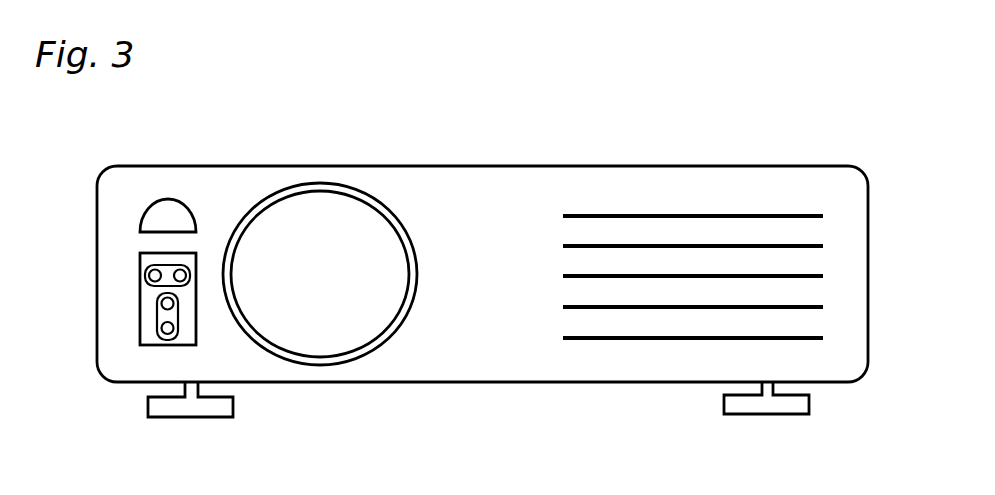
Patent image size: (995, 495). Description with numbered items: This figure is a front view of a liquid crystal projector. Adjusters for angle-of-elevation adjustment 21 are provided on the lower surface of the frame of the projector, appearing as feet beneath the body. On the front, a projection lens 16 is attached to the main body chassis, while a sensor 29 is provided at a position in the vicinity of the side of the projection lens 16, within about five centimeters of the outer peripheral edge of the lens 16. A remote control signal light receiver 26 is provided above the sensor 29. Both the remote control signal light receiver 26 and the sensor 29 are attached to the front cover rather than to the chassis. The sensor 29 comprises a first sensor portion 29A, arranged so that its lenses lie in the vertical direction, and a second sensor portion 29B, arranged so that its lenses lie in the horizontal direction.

The projection lens 16 is at (340, 202).
The remote control signal light receiver 26 is at (167, 202).
The sensor 29 is at (120, 333).
The first sensor portion 29A is at (165, 316).
The second sensor portion 29B is at (146, 275).
The adjusters for angle-of-elevation adjustment 21 is at (208, 405).